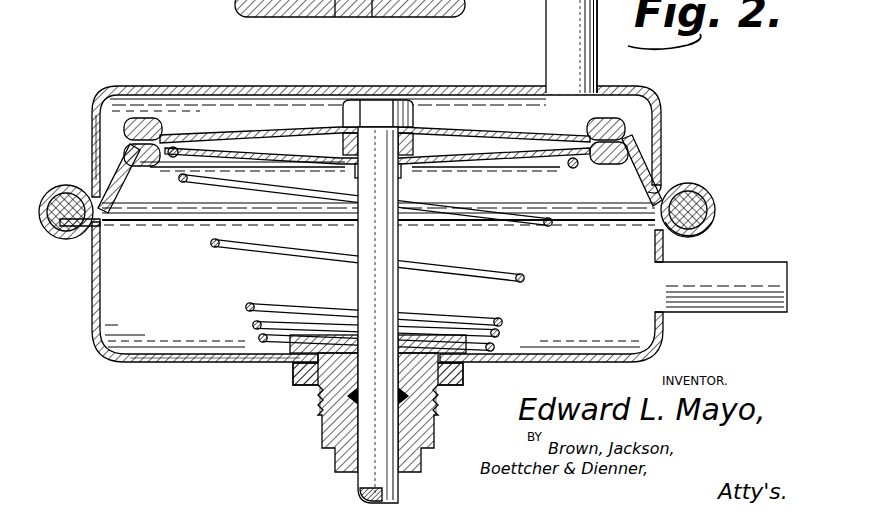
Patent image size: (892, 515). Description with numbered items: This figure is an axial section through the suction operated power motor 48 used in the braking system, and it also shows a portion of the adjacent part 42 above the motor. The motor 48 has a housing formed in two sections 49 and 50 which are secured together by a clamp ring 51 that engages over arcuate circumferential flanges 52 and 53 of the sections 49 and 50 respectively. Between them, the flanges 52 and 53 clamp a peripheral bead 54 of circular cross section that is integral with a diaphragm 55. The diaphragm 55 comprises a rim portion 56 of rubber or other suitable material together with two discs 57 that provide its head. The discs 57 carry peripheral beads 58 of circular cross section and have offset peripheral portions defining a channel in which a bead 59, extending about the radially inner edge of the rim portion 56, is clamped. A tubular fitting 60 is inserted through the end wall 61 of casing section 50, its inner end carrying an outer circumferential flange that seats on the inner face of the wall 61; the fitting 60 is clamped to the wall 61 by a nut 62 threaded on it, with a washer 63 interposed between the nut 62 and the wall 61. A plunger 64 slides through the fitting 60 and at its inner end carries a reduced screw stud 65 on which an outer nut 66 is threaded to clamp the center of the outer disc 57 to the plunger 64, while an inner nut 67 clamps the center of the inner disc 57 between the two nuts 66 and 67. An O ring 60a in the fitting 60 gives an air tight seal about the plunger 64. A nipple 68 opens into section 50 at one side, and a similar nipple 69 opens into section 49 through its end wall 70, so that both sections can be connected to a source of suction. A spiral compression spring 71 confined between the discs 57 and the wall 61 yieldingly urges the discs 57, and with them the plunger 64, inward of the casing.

The mounting bar 42 is at (262, 16).
The suction operated power motor 48 is at (106, 86).
The housing section 49 is at (92, 143).
The housing section 50 is at (93, 288).
The clamp ring 51 is at (714, 206).
The arcuate circumferential flange 52 is at (700, 188).
The arcuate circumferential flange 53 is at (708, 235).
The peripheral bead 54 is at (58, 238).
The diaphragm 55 is at (118, 191).
The rim portion 56 is at (628, 185).
The discs 57 is at (242, 134).
The peripheral beads 58 is at (626, 128).
The bead 59 is at (594, 120).
The tubular fitting 60 is at (332, 447).
The O ring 60a is at (322, 420).
The end wall 61 is at (224, 364).
The nut 62 is at (302, 388).
The washer 63 is at (292, 364).
The plunger 64 is at (358, 483).
The reduced screw stud 65 is at (383, 98).
The outer nut 66 is at (415, 150).
The inner nut 67 is at (352, 104).
The nipple 68 is at (748, 298).
The nipple 69 is at (546, 21).
The end wall 70 is at (487, 76).
The spiral compression spring 71 is at (527, 278).